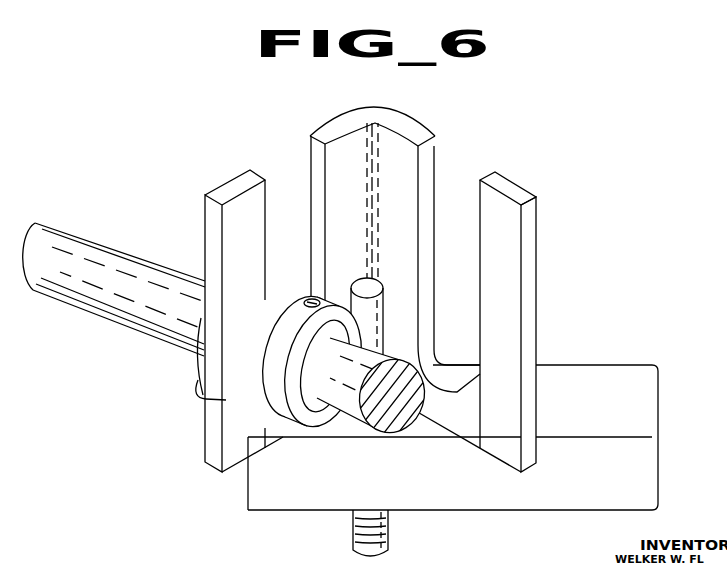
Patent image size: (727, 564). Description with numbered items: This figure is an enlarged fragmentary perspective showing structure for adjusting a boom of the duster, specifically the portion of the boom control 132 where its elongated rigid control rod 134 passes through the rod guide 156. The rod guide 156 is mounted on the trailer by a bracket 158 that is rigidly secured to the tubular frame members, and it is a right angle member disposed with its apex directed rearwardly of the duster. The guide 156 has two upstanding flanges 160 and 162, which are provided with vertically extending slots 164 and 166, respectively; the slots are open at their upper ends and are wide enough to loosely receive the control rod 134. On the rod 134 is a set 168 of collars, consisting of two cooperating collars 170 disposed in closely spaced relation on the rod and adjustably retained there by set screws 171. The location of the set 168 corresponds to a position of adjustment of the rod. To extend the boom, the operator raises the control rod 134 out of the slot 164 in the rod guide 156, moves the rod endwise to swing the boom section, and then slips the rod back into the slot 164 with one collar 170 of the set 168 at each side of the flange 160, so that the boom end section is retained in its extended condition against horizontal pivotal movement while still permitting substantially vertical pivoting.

The boom control 132 is at (80, 223).
The control rod 134 is at (127, 252).
The rod guide 156 is at (411, 309).
The bracket 158 is at (571, 366).
The upstanding flange 160 is at (359, 245).
The upstanding flange 162 is at (433, 134).
The slot 164 is at (268, 193).
The slot 166 is at (481, 194).
The set of collars 168 is at (198, 366).
The collar 170 is at (263, 377).
The set screw 171 is at (310, 300).